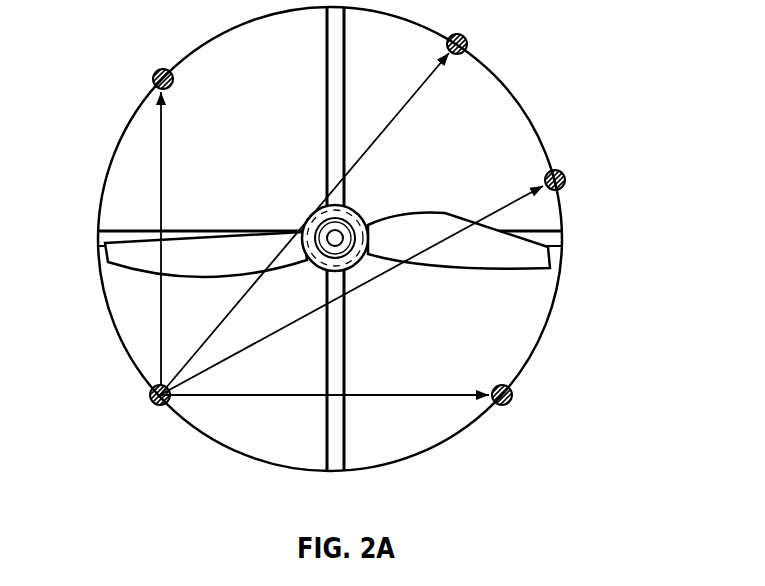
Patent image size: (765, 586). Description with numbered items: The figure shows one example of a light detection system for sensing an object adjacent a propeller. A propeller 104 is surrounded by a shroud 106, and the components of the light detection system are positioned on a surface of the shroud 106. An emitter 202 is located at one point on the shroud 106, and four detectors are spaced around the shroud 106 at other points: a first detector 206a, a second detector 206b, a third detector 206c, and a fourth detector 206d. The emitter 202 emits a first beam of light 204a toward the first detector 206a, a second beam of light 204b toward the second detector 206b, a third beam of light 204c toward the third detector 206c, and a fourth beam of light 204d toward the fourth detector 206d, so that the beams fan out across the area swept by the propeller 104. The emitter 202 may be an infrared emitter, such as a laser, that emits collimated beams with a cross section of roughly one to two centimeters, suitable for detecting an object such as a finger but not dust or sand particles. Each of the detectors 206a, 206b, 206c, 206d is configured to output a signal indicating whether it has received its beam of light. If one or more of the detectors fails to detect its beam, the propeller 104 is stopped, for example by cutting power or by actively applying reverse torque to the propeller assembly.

The propeller 104 is at (512, 277).
The shroud 106 is at (105, 178).
The emitter 202 is at (151, 403).
The first beam of light 204a is at (158, 332).
The second beam of light 204b is at (415, 89).
The third beam of light 204c is at (520, 200).
The fourth beam of light 204d is at (448, 394).
The first detector 206a is at (155, 70).
The second detector 206b is at (466, 37).
The third detector 206c is at (565, 177).
The fourth detector 206d is at (512, 403).